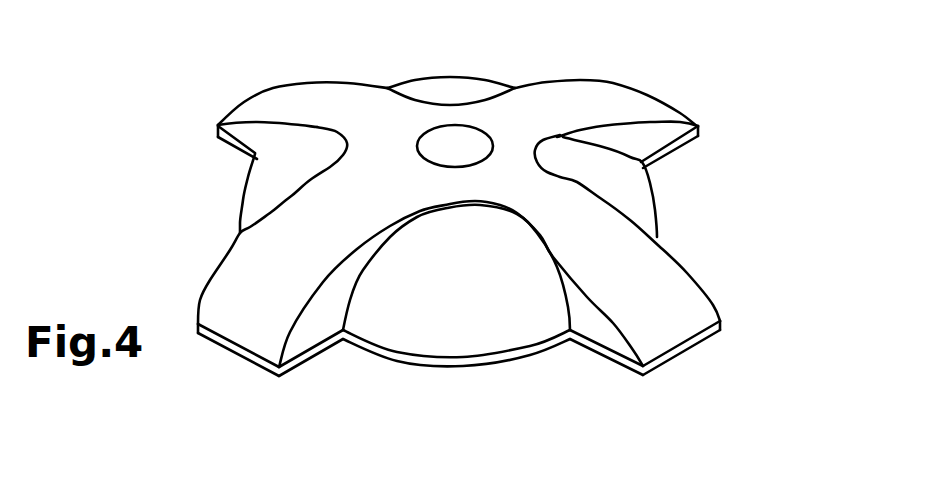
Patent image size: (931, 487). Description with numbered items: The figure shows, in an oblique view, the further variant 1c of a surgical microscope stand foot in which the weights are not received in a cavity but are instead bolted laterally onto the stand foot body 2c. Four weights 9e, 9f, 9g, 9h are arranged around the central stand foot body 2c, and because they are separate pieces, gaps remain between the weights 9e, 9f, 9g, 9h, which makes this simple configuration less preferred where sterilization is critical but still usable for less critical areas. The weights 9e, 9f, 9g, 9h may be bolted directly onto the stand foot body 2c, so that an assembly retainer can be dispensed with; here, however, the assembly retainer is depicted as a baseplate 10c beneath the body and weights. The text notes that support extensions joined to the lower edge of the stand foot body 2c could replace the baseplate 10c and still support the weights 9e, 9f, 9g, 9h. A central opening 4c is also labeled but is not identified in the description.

The further variant 1c is at (712, 59).
The stand foot body 2c is at (628, 87).
The central hole 4c is at (440, 143).
The weight 9e is at (470, 92).
The weight 9f is at (640, 190).
The weight 9g is at (435, 313).
The weight 9h is at (278, 153).
The baseplate 10c is at (700, 345).